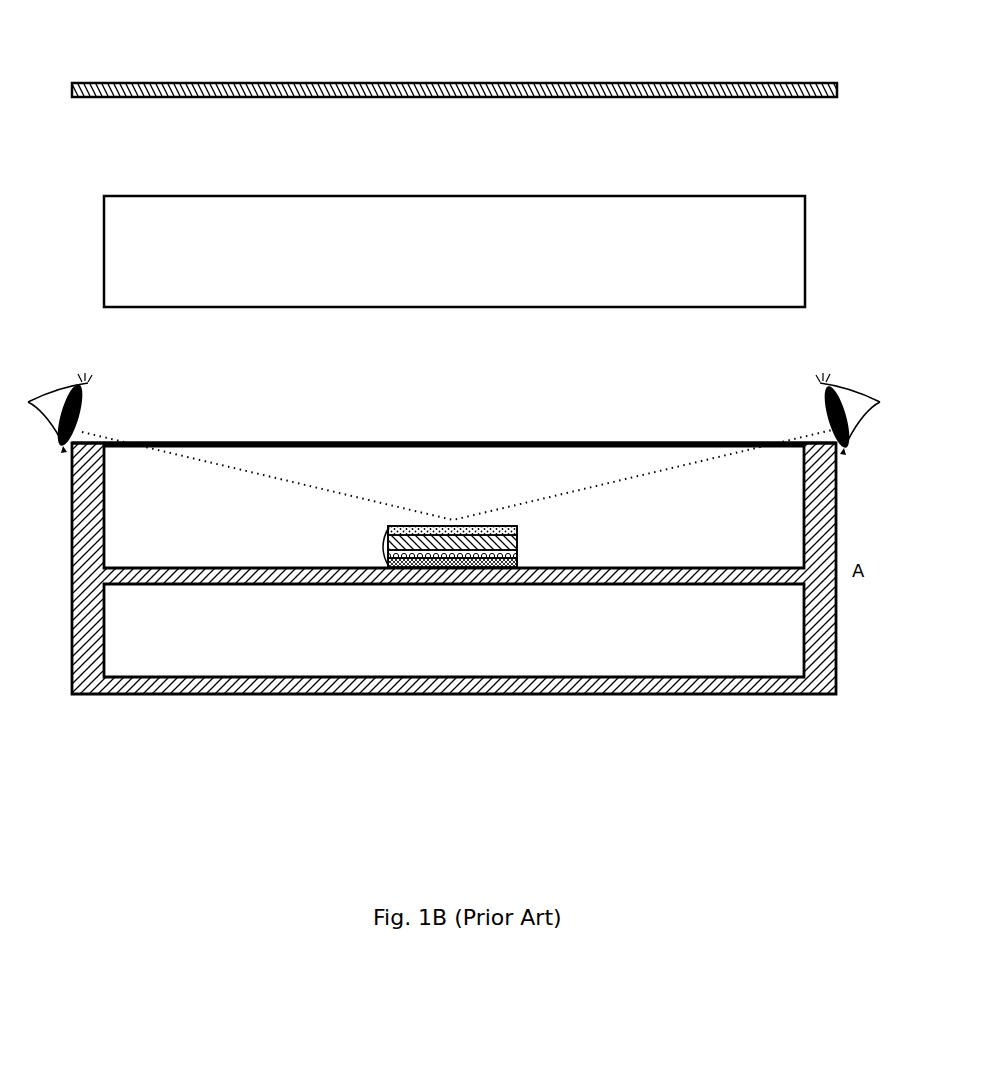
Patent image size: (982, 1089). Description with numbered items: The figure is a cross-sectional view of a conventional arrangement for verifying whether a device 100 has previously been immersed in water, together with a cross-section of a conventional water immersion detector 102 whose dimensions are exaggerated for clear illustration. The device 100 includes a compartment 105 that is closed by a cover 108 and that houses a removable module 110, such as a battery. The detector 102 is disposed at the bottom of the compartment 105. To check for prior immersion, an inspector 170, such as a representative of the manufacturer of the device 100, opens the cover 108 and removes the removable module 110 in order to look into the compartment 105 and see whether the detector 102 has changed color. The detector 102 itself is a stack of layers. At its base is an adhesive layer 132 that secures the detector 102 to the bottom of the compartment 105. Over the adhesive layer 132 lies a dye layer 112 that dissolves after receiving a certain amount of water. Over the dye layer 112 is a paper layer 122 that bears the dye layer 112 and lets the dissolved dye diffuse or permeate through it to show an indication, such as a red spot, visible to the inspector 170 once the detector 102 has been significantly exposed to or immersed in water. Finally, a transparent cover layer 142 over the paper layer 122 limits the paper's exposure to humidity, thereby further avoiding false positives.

The device 100 is at (218, 816).
The detector 102 is at (475, 539).
The compartment 105 is at (121, 538).
The cover 108 is at (591, 83).
The removable module 110 is at (592, 210).
The dye layer 112 is at (514, 554).
The paper layer 122 is at (510, 541).
The adhesive layer 132 is at (514, 562).
The transparent cover layer 142 is at (400, 530).
The inspector 170 is at (56, 402).